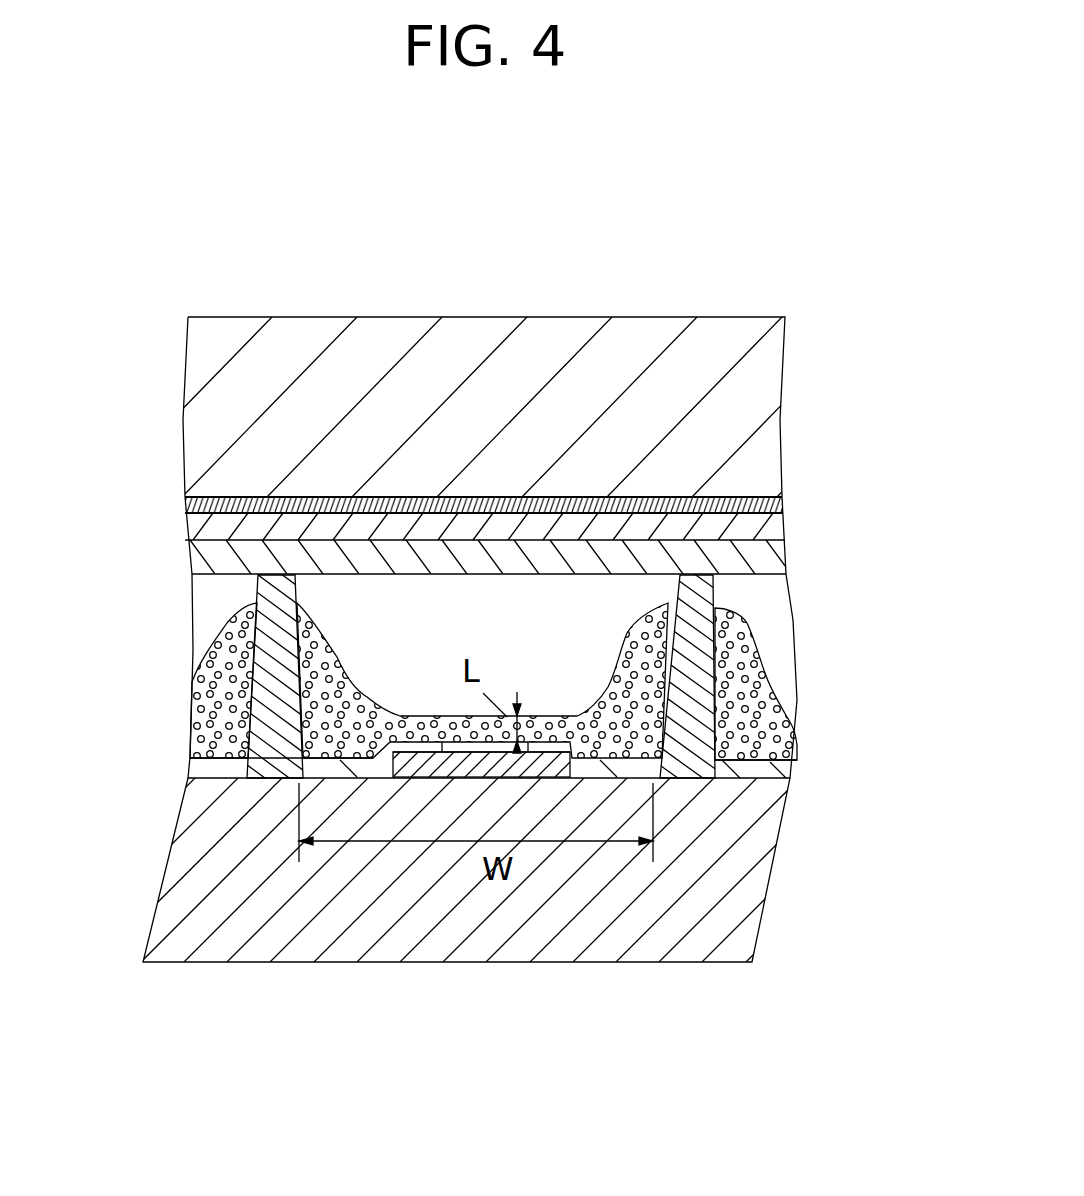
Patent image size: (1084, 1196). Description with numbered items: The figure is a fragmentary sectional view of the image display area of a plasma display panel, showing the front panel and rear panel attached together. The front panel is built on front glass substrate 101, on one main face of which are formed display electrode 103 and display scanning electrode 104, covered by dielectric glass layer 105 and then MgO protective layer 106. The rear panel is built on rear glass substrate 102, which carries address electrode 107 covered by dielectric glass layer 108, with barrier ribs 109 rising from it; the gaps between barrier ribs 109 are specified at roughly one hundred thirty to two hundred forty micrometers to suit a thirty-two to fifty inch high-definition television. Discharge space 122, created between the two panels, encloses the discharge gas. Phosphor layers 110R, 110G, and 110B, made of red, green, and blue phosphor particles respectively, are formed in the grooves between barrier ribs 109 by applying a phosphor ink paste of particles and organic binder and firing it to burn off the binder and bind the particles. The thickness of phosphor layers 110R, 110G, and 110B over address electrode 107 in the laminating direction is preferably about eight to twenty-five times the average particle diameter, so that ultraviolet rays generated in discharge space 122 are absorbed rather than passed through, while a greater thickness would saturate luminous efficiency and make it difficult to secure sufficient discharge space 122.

The front glass substrate 101 is at (772, 400).
The rear glass substrate 102 is at (760, 866).
The display electrode 103 is at (783, 502).
The display scanning electrode 104 is at (800, 496).
The dielectric glass layer 105 is at (783, 532).
The MgO protective layer 106 is at (785, 562).
The address electrode 107 is at (360, 781).
The dielectric glass layer 108 is at (218, 768).
The barrier rib 109 is at (480, 532).
The red phosphor layer 110R is at (197, 689).
The green phosphor layer 110G is at (612, 730).
The blue phosphor layer 110B is at (775, 725).
The discharge space 122 is at (605, 638).